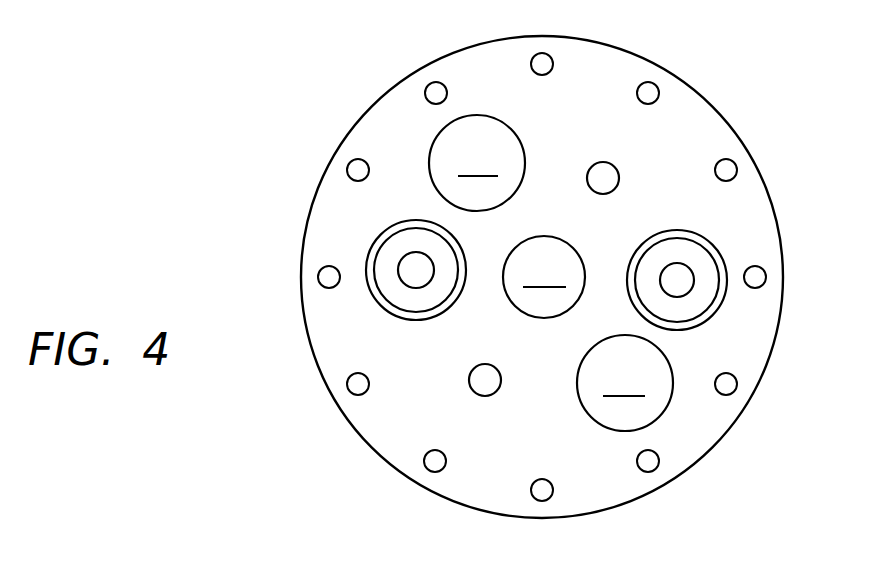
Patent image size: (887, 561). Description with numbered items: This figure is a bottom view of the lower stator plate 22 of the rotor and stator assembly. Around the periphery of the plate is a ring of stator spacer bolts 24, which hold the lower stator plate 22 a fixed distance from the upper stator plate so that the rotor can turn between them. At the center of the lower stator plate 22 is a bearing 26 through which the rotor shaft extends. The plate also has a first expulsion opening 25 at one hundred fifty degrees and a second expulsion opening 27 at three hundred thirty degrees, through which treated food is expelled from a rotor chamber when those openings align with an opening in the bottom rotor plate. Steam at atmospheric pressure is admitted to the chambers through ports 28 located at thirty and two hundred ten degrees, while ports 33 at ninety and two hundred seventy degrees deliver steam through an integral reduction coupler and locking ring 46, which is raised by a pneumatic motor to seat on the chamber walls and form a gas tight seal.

The lower stator plate 22 is at (360, 122).
The stator spacer bolts 24 is at (347, 383).
The first expulsion opening 25 is at (625, 383).
The bearing 26 is at (544, 277).
The second expulsion opening 27 is at (477, 163).
The ports 28 is at (618, 166).
The ports 33 is at (402, 256).
The integral reduction coupler and locking ring 46 is at (367, 257).